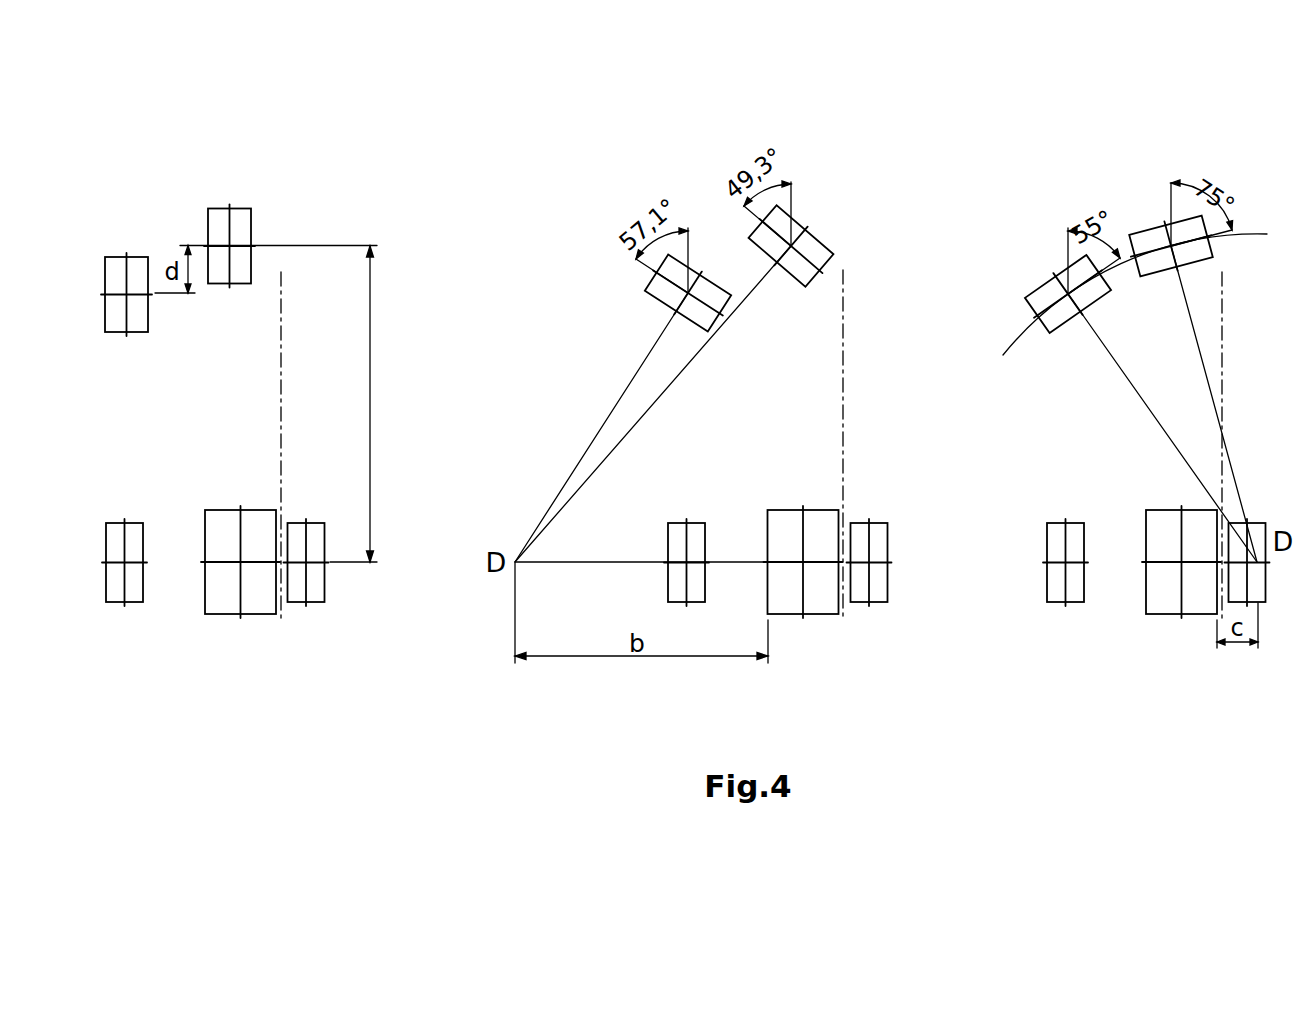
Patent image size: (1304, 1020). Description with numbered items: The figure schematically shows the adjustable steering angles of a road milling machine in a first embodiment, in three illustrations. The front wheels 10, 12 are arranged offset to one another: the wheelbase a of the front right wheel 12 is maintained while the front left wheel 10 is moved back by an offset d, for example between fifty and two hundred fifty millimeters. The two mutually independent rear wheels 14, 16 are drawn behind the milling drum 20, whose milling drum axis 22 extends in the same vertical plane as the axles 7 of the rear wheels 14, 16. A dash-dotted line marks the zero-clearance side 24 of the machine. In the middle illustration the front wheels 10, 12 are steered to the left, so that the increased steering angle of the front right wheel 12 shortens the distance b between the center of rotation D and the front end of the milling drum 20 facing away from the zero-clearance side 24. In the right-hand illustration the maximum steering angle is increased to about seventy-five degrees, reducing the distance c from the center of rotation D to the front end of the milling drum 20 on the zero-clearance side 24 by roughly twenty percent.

The front left wheel 10 is at (117, 277).
The front right wheel 12 is at (217, 221).
The rear wheel 14 is at (115, 540).
The rear wheel 16 is at (300, 535).
The milling drum 20 is at (230, 615).
The milling drum axis 22 is at (222, 560).
The zero-clearance side 24 is at (281, 360).
The axle 7 is at (343, 560).